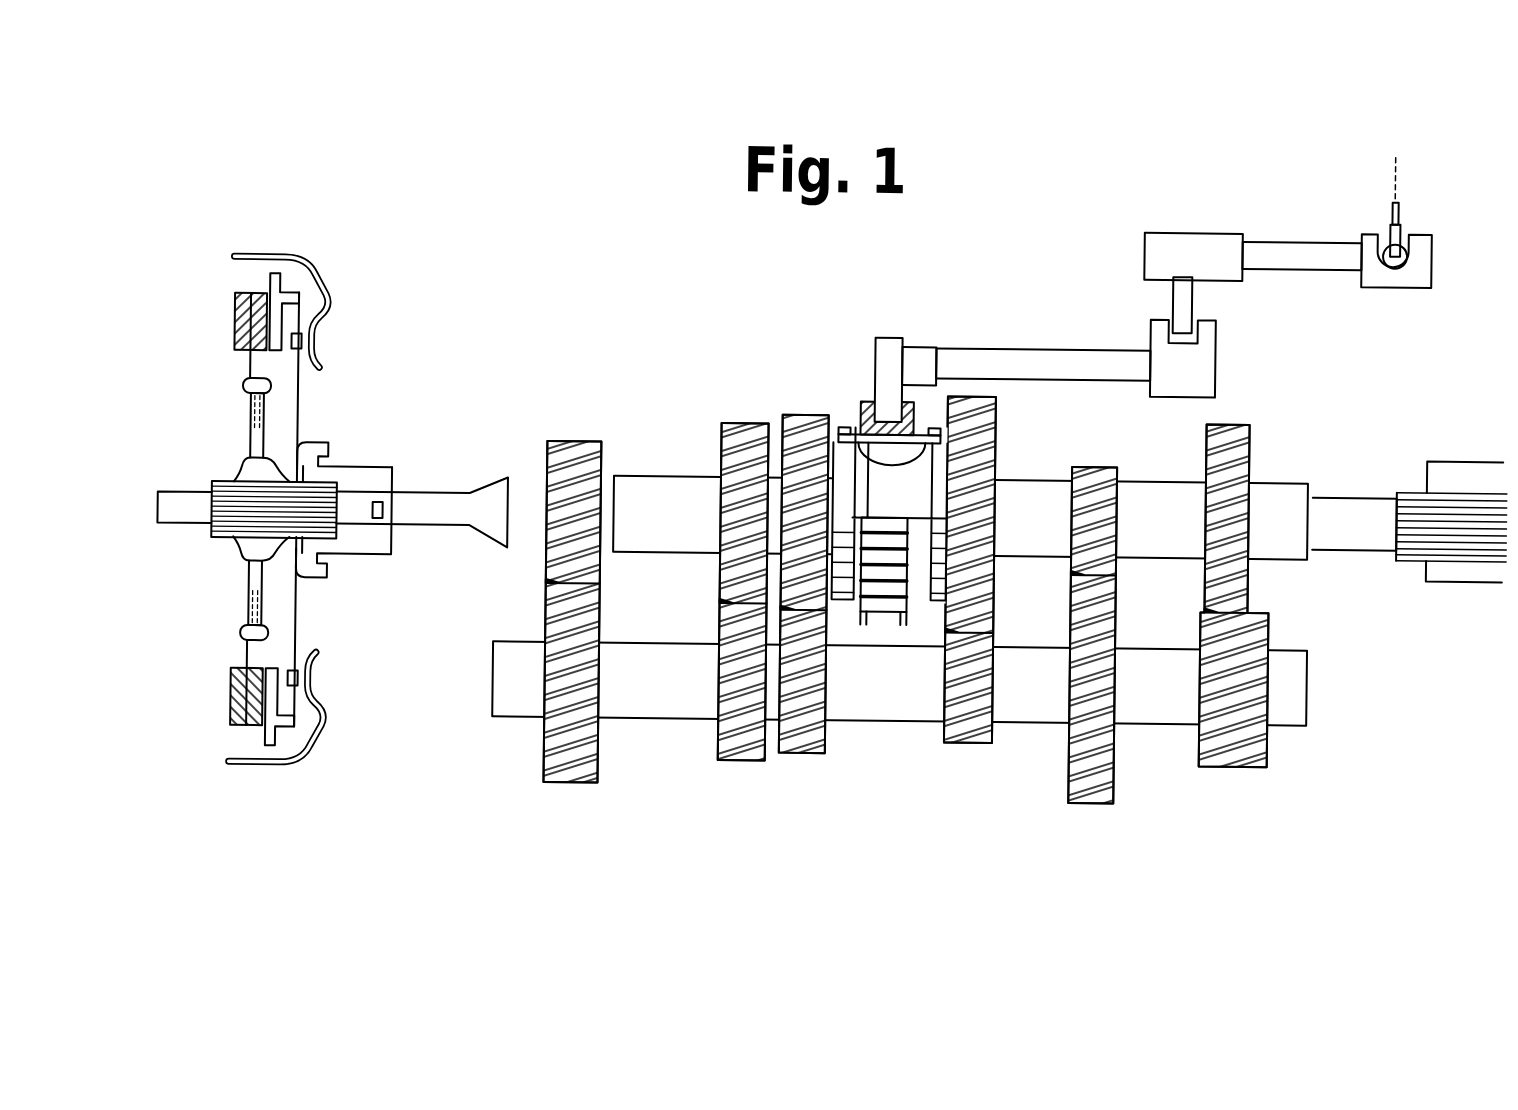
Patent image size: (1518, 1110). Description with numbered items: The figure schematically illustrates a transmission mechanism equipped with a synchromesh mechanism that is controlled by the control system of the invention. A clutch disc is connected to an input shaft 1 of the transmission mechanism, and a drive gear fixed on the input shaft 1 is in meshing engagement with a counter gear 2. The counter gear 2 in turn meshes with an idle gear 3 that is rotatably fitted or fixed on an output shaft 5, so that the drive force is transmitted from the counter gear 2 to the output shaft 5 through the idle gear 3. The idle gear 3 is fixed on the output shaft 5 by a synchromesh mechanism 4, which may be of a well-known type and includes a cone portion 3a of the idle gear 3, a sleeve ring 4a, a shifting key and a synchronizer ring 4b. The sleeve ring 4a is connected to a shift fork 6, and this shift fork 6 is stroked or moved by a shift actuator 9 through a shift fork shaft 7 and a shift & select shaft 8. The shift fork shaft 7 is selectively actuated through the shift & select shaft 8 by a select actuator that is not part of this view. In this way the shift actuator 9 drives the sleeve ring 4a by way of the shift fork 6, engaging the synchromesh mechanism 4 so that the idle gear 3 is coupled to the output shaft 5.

The input shaft 1 is at (425, 507).
The counter gear 2 is at (651, 703).
The idle gear 3 is at (797, 425).
The cone portion 3a is at (840, 430).
The synchromesh mechanism 4 is at (887, 640).
The sleeve ring 4a is at (865, 400).
The synchronizer ring 4b is at (908, 434).
The output shaft 5 is at (1350, 500).
The shift fork 6 is at (889, 342).
The shift fork shaft 7 is at (1045, 357).
The shift & select shaft 8 is at (1298, 242).
The shift actuator 9 is at (1394, 195).